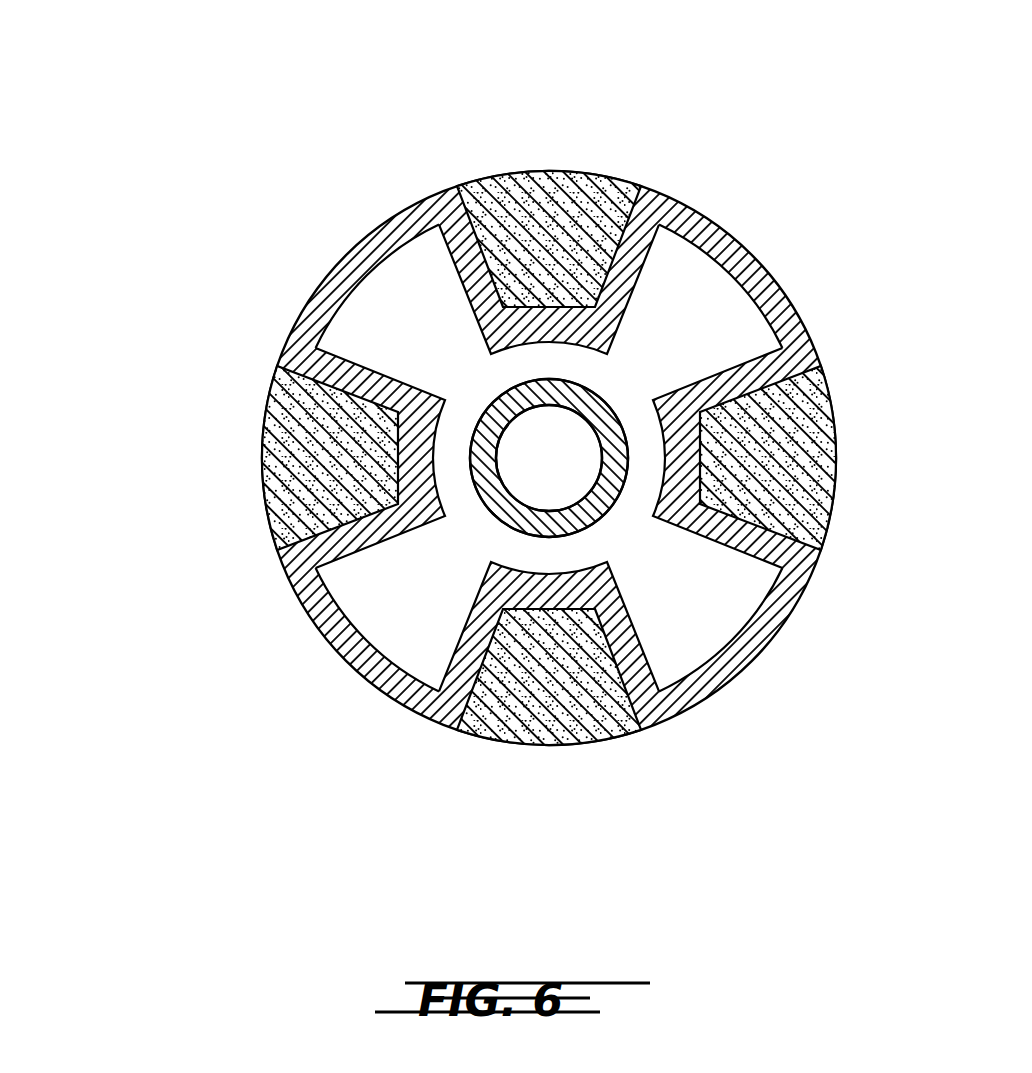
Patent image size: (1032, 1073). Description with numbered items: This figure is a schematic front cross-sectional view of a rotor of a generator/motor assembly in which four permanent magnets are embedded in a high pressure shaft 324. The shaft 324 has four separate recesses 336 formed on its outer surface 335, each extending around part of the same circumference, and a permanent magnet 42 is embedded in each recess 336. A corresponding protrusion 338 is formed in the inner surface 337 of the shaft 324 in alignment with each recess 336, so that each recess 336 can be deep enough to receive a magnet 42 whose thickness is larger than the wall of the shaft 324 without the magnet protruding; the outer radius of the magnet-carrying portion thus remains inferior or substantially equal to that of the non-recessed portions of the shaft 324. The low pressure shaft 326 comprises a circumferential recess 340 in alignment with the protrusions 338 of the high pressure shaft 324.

The outer surface 335 is at (417, 202).
The inner surface 337 is at (368, 281).
The protrusion 338 is at (490, 433).
The permanent magnet 42 is at (478, 432).
The recess 336 is at (300, 510).
The high pressure shaft 324 is at (294, 581).
The low pressure shaft 326 is at (616, 522).
The circumferential recess 340 is at (538, 537).